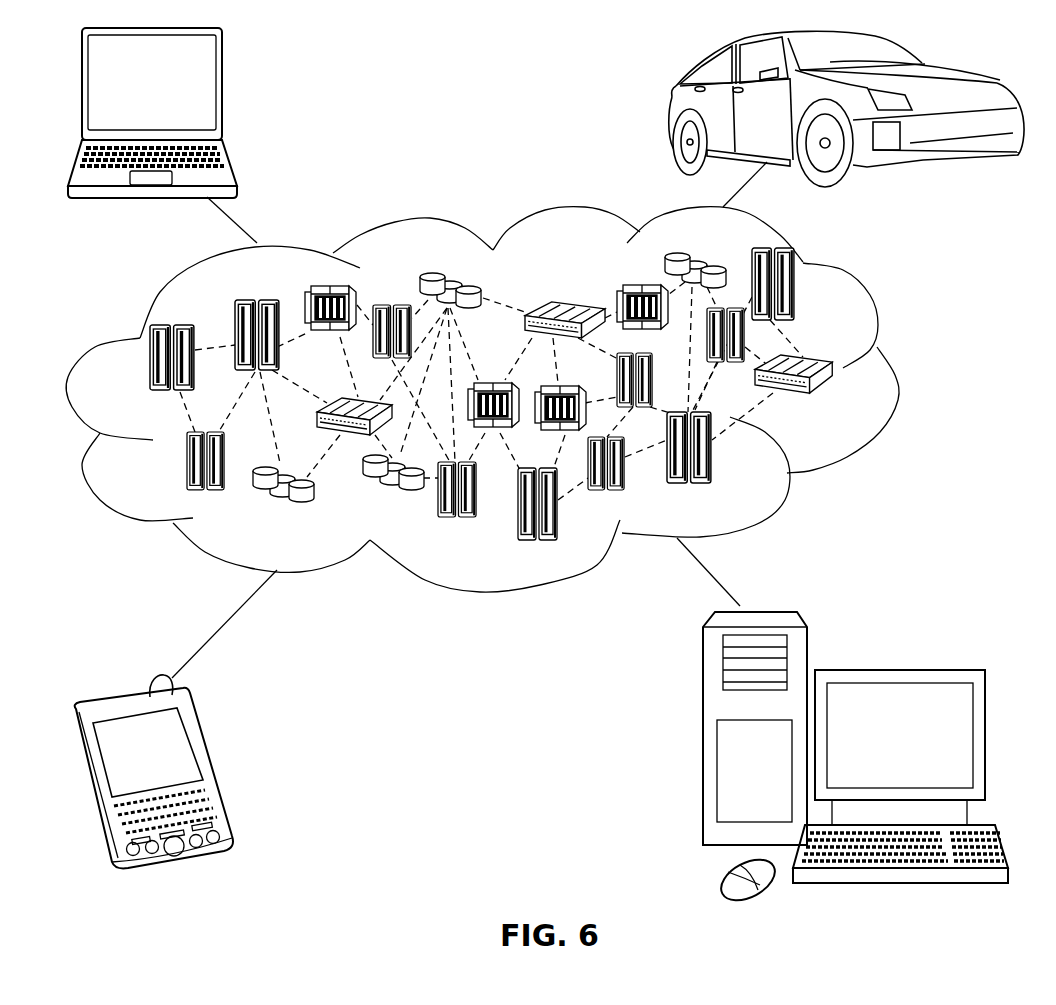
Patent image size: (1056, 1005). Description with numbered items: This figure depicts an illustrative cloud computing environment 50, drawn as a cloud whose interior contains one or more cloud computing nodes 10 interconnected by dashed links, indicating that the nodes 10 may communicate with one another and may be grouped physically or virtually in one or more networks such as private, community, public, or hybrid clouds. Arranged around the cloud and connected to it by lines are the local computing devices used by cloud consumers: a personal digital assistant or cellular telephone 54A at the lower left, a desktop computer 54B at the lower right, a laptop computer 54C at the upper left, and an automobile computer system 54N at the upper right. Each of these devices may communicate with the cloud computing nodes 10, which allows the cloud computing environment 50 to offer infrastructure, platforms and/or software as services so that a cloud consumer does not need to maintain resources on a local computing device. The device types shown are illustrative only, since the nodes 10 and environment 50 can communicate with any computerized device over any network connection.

The cloud computing node 10 is at (838, 403).
The cloud computing environment 50 is at (898, 372).
The personal digital assistant (PDA) or cellular telephone 54A is at (210, 763).
The desktop computer 54B is at (897, 670).
The laptop computer 54C is at (222, 93).
The automobile computer system 54N is at (672, 108).